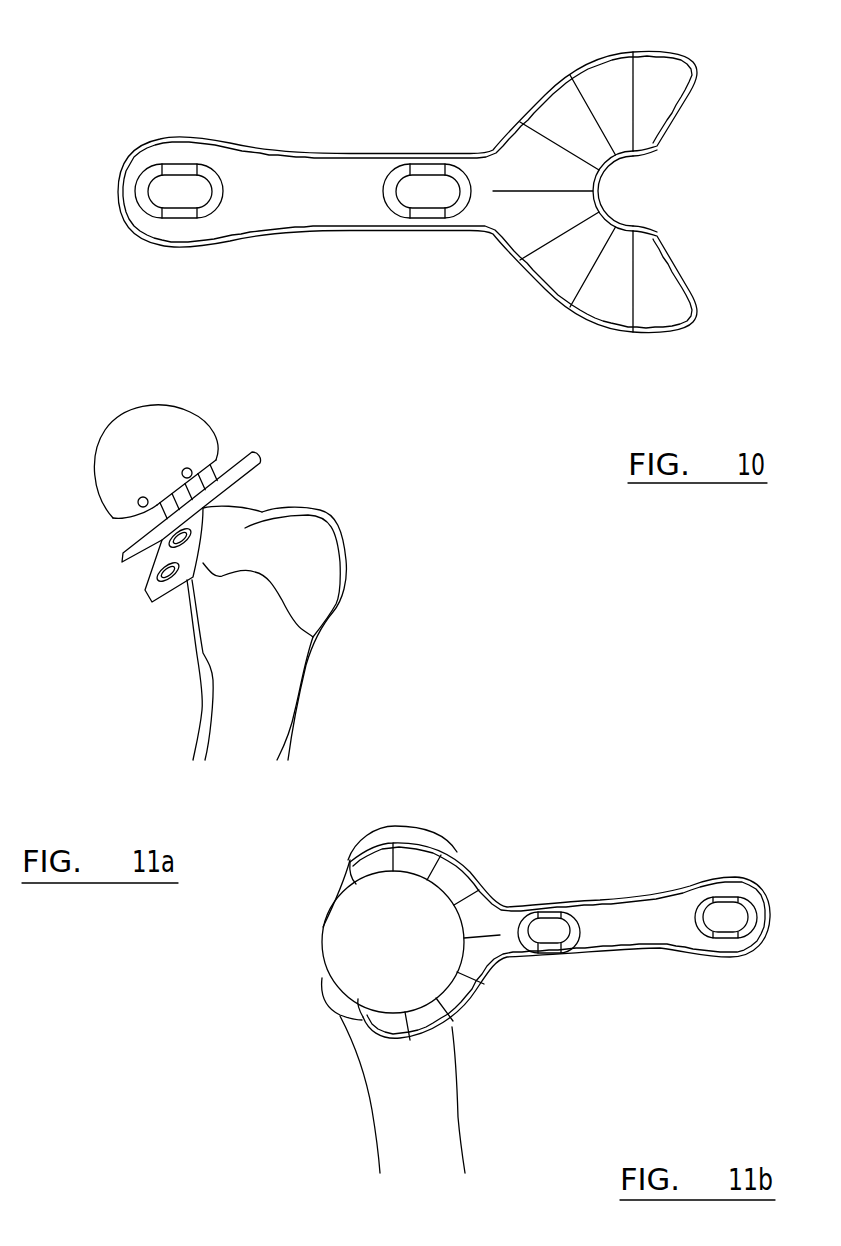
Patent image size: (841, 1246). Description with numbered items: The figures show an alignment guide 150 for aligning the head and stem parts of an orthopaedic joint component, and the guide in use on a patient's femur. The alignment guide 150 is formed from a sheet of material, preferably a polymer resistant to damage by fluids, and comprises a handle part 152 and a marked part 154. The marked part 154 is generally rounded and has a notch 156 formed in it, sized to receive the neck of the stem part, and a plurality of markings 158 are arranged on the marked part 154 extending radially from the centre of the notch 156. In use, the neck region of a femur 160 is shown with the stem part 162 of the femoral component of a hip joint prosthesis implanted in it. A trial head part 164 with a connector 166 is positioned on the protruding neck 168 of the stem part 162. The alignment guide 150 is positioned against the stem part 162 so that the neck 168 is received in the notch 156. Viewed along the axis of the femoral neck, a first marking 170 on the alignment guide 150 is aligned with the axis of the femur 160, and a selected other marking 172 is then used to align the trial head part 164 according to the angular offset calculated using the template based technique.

In FIG. 10, the alignment guide 150 is at (378, 150).
In FIG. 11A, the alignment guide 150 is at (120, 570).
In FIG. 11B, the alignment guide 150 is at (643, 925).
In FIG. 10, the handle part 152 is at (325, 202).
In FIG. 10, the marked part 154 is at (557, 270).
In FIG. 10, the notch 156 is at (637, 193).
In FIG. 10, the markings 158 is at (585, 110).
In FIG. 11A, the femur 160 is at (283, 677).
In FIG. 11B, the femur 160 is at (397, 1112).
In FIG. 11A, the stem part 162 is at (198, 565).
In FIG. 11A, the trial head part 164 is at (178, 435).
In FIG. 11B, the trial head part 164 is at (370, 945).
In FIG. 11A, the connector 166 is at (155, 515).
In FIG. 11A, the neck 168 is at (231, 508).
In FIG. 11B, the first marking 170 is at (400, 860).
In FIG. 11B, the selected other marking 172 is at (468, 980).